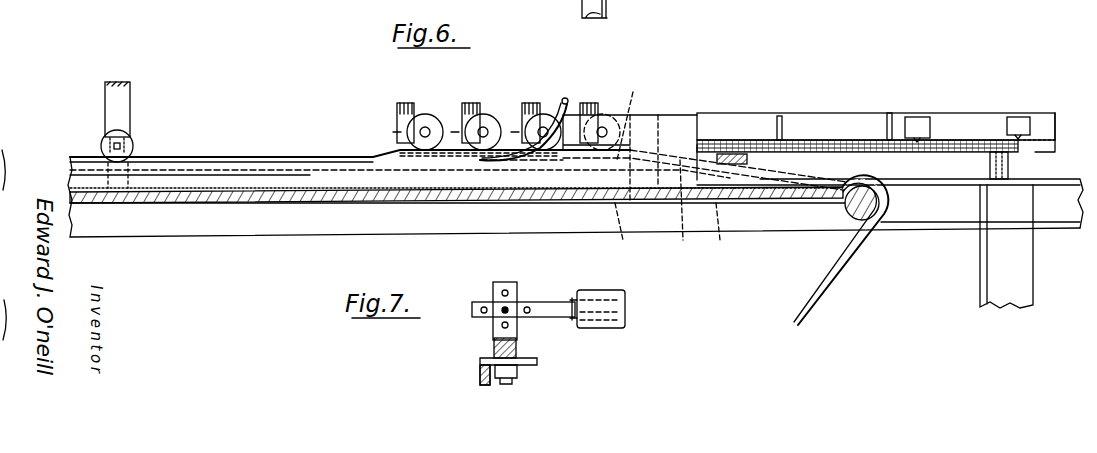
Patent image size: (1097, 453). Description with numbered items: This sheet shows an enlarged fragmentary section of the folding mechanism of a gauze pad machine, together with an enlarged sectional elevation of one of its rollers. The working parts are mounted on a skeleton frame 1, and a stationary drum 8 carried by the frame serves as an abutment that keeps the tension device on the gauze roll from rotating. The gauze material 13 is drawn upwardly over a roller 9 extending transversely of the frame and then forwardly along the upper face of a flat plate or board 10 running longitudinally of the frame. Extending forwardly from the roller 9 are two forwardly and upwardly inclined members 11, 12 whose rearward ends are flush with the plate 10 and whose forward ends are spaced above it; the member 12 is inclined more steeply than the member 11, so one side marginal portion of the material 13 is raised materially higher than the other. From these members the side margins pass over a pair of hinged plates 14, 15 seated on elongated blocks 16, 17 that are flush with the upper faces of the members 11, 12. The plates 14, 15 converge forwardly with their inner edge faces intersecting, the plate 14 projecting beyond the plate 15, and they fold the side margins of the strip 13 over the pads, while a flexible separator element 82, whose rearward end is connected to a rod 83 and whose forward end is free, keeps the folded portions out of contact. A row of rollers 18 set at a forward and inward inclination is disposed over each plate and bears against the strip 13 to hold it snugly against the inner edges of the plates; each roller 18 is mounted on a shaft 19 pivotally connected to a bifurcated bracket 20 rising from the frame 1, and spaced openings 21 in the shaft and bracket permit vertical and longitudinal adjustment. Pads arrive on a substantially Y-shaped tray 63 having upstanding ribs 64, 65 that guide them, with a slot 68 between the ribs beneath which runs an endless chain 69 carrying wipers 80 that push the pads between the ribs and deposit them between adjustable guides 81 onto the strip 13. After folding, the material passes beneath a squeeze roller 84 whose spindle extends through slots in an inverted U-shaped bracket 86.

In FIG. 6, the skeleton frame 1 is at (268, 222).
In FIG. 6, the stationary drum 8 is at (674, 125).
In FIG. 6, the roller 9 is at (852, 212).
In FIG. 6, the flat plate or board 10 is at (545, 200).
In FIG. 6, the inclined member 11 is at (723, 229).
In FIG. 6, the inclined member 12 is at (683, 211).
In FIG. 6, the material 13 is at (835, 296).
In FIG. 6, the hinged plate 14 is at (232, 170).
In FIG. 6, the hinged plate 15 is at (272, 157).
In FIG. 6, the elongated block 16 is at (623, 232).
In FIG. 6, the elongated block 17 is at (637, 138).
In FIG. 6, the roller 18 is at (488, 122).
In FIG. 7, the roller 18 is at (600, 329).
In FIG. 7, the shaft 19 is at (554, 317).
In FIG. 6, the bifurcated bracket 20 is at (462, 112).
In FIG. 7, the bifurcated bracket 20 is at (497, 326).
In FIG. 7, the spaced openings 21 is at (493, 290).
In FIG. 6, the Y-shaped tray 63 is at (1050, 145).
In FIG. 6, the upstanding rib 64 is at (816, 120).
In FIG. 6, the upstanding rib 65 is at (891, 118).
In FIG. 6, the slot 68 is at (722, 153).
In FIG. 6, the endless chain 69 is at (966, 145).
In FIG. 6, the wiper 80 is at (778, 116).
In FIG. 6, the adjustable guide 81 is at (1024, 152).
In FIG. 6, the flexible separator element 82 is at (338, 162).
In FIG. 6, the rod 83 is at (567, 97).
In FIG. 6, the squeeze roller 84 is at (133, 142).
In FIG. 6, the inverted U-shaped bracket 86 is at (115, 98).